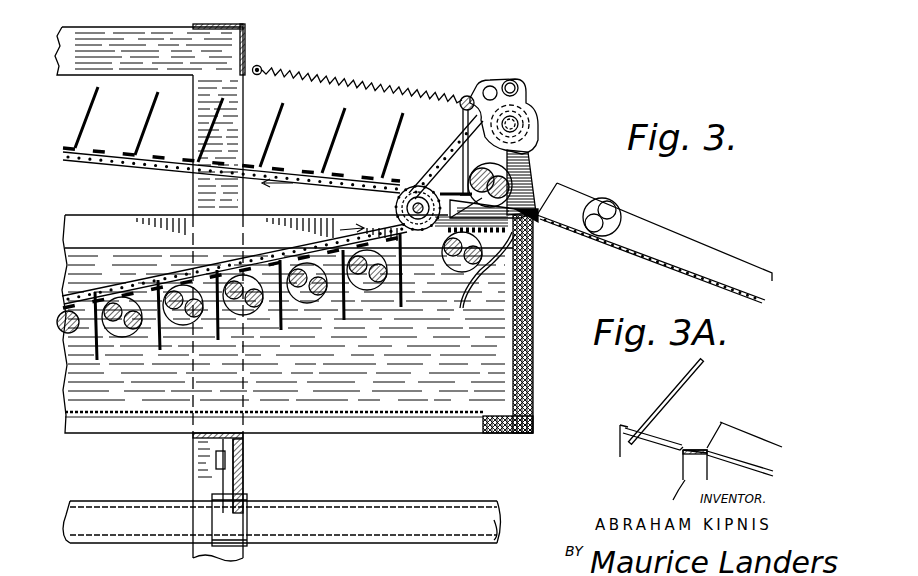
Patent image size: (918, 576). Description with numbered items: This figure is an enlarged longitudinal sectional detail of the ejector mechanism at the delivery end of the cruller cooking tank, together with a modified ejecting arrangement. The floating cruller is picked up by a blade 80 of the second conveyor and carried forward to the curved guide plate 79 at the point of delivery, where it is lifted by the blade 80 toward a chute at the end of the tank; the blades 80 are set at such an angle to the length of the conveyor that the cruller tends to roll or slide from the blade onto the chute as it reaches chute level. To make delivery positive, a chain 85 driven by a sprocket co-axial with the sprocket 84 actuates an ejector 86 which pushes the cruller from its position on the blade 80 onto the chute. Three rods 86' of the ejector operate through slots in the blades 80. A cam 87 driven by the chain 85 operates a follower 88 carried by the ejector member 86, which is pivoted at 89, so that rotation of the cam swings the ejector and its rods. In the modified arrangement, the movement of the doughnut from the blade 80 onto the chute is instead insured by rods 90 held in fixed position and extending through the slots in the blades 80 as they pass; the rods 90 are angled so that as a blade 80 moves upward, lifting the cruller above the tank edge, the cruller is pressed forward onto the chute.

In FIG. 3, the curved guide plate 79 is at (500, 296).
In FIG. 3, the blade 80 is at (504, 207).
In FIG. 3A, the blade 80 is at (664, 443).
In FIG. 3, the sprocket wheel 84 is at (396, 207).
In FIG. 3, the chain 85 is at (444, 152).
In FIG. 3, the ejector 86 is at (368, 74).
In FIG. 3, the rod 86' is at (442, 151).
In FIG. 3, the cam 87 is at (538, 117).
In FIG. 3, the follower 88 is at (518, 84).
In FIG. 3, the pivot 89 is at (491, 85).
In FIG. 3A, the rod 90 is at (693, 378).